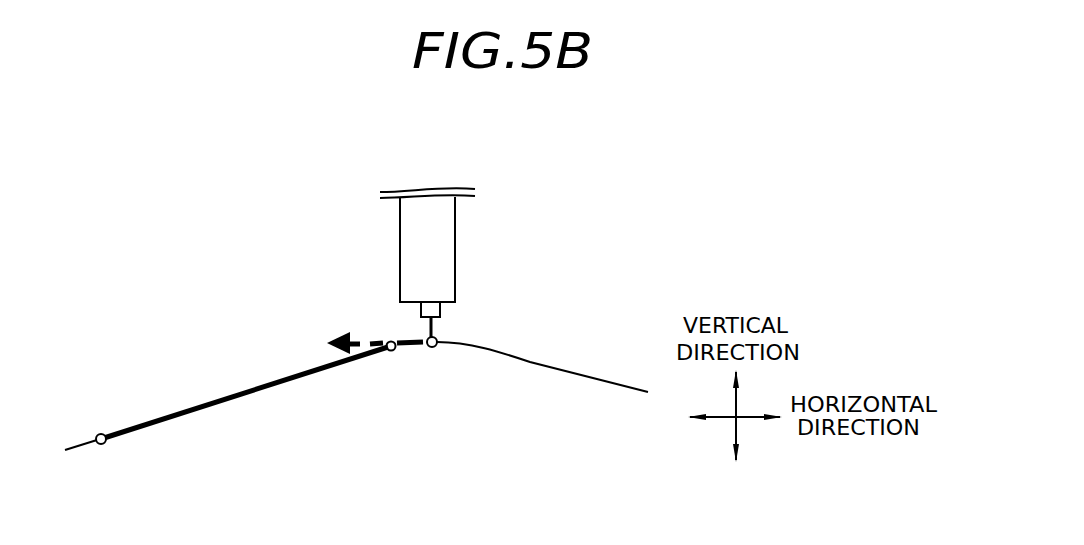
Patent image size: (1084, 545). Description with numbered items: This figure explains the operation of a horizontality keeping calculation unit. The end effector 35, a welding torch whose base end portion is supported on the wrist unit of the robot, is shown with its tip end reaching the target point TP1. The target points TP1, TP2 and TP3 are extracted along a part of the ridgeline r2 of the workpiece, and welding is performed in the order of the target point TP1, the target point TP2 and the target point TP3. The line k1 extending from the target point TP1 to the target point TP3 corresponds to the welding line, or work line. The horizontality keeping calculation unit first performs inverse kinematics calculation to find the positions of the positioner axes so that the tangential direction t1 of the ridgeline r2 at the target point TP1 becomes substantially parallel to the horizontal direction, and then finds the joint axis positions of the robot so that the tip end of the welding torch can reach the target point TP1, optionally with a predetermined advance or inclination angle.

The end effector 35 is at (458, 250).
The target point TP1 is at (438, 341).
The target point TP2 is at (391, 351).
The target point TP3 is at (101, 434).
The line k1 is at (228, 396).
The tangential direction t1 is at (347, 335).
The ridgeline r2 is at (565, 370).